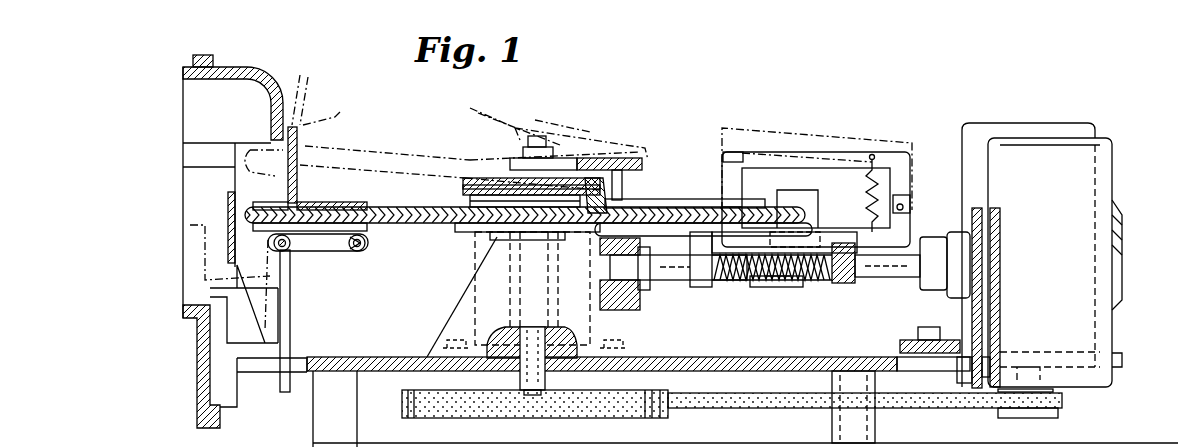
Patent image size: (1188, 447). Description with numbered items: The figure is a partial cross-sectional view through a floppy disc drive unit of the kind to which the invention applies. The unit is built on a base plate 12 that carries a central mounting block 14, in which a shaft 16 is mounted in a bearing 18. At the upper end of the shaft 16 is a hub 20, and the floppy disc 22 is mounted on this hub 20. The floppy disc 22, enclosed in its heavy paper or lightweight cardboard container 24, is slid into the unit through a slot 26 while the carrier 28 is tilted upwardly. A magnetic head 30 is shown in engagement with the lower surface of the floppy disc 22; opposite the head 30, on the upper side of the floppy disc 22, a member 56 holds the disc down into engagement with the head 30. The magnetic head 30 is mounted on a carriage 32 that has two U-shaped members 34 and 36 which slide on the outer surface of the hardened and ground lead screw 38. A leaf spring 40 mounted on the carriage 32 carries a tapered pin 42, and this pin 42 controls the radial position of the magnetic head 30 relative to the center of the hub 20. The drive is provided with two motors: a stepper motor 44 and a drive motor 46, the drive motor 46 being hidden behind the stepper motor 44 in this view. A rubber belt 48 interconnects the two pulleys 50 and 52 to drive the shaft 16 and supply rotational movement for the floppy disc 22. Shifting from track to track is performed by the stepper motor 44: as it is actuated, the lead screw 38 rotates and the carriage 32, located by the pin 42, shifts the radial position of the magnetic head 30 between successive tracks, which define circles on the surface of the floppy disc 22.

The base plate 12 is at (358, 371).
The central mounting block 14 is at (462, 312).
The shaft 16 is at (540, 388).
The bearing 18 is at (513, 360).
The hub 20 is at (475, 230).
The floppy disc 22 is at (395, 205).
The container 24 is at (250, 222).
The slot 26 is at (190, 152).
The carrier 28 is at (313, 203).
The magnetic head 30 is at (725, 224).
The carriage 32 is at (825, 235).
The U-shaped member 34 is at (527, 155).
The U-shaped member 36 is at (857, 282).
The lead screw 38 is at (745, 282).
The leaf spring 40 is at (788, 287).
The tapered pin 42 is at (776, 287).
The stepper motor 44 is at (1088, 250).
The drive motor 46 is at (1033, 128).
The rubber belt 48 is at (947, 402).
The pulley 50 is at (1057, 413).
The pulley 52 is at (415, 413).
The member 56 is at (725, 155).